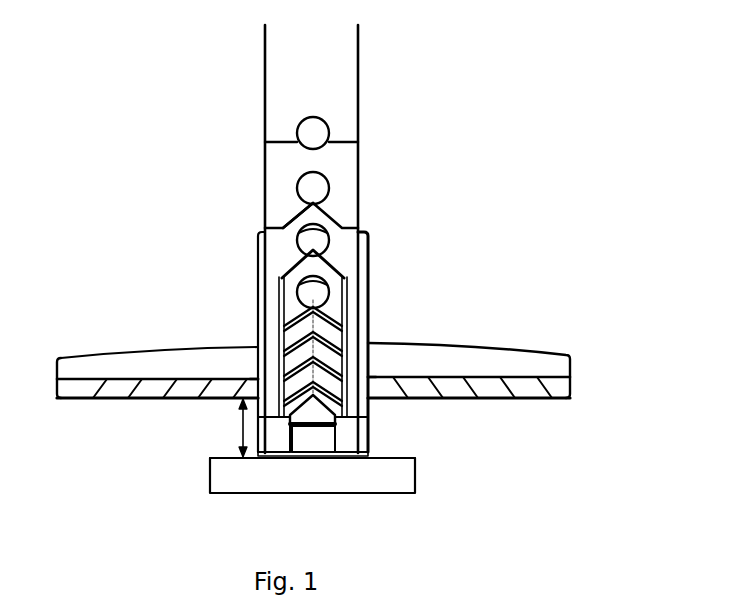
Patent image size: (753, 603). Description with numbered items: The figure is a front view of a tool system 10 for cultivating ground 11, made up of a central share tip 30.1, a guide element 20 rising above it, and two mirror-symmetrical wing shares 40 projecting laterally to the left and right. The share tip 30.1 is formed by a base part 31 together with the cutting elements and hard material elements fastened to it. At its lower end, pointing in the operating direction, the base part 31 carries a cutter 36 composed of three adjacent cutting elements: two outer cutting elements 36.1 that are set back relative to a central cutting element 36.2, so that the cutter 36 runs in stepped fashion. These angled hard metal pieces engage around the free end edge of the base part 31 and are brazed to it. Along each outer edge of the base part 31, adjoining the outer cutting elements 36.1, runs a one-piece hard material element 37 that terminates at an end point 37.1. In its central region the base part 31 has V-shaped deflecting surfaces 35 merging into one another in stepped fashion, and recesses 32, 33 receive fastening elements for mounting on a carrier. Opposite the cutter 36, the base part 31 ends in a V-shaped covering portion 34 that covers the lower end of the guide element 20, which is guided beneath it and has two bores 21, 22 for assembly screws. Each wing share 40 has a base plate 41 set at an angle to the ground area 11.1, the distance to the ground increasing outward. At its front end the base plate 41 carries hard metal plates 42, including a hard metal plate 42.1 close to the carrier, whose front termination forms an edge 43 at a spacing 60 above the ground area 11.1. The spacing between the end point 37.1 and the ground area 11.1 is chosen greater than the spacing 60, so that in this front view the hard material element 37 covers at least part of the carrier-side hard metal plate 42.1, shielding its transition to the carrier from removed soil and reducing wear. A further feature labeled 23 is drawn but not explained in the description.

The tool system 10 is at (342, 259).
The ground 11 is at (388, 472).
The ground area 11.1 is at (220, 456).
The guide element 20 is at (317, 82).
The bore 21 is at (328, 123).
The bore 22 is at (325, 176).
The wedge-shaped seat 23 is at (328, 210).
The share tip 30.1 is at (260, 230).
The base part 31 is at (270, 283).
The recess 32 is at (333, 241).
The recess 33 is at (338, 282).
The covering portion 34 is at (300, 220).
The deflecting surfaces 35 is at (326, 327).
The cutter 36 is at (357, 444).
The outer cutting element 36.1 is at (268, 433).
The central cutting element 36.2 is at (312, 438).
The hard material element 37 is at (272, 396).
The end point 37.1 is at (283, 390).
The wing share 40 is at (70, 353).
The base plate 41 is at (102, 363).
The hard metal plate 42 is at (72, 390).
The hard metal plate close to the carrier 42.1 is at (255, 380).
The edge 43 is at (117, 387).
The spacing 60 is at (243, 428).